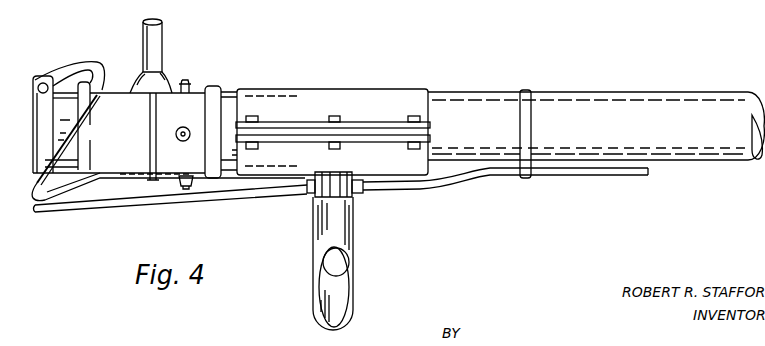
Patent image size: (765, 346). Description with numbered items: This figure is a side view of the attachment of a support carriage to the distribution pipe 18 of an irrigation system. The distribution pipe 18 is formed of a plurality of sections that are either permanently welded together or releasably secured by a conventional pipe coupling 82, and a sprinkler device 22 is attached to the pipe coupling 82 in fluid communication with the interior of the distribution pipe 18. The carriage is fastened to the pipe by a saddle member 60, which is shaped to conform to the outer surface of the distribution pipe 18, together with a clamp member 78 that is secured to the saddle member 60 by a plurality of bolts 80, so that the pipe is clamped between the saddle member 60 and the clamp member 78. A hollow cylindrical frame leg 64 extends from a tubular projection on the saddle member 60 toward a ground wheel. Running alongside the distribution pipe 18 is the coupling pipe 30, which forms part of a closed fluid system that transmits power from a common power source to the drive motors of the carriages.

The distribution pipe 18 is at (625, 100).
The sprinkler device 22 is at (157, 45).
The coupling pipe 30 is at (95, 205).
The saddle member 60 is at (398, 160).
The frame leg 64 is at (355, 284).
The clamp member 78 is at (372, 98).
The bolts 80 is at (328, 120).
The pipe coupling 82 is at (113, 100).